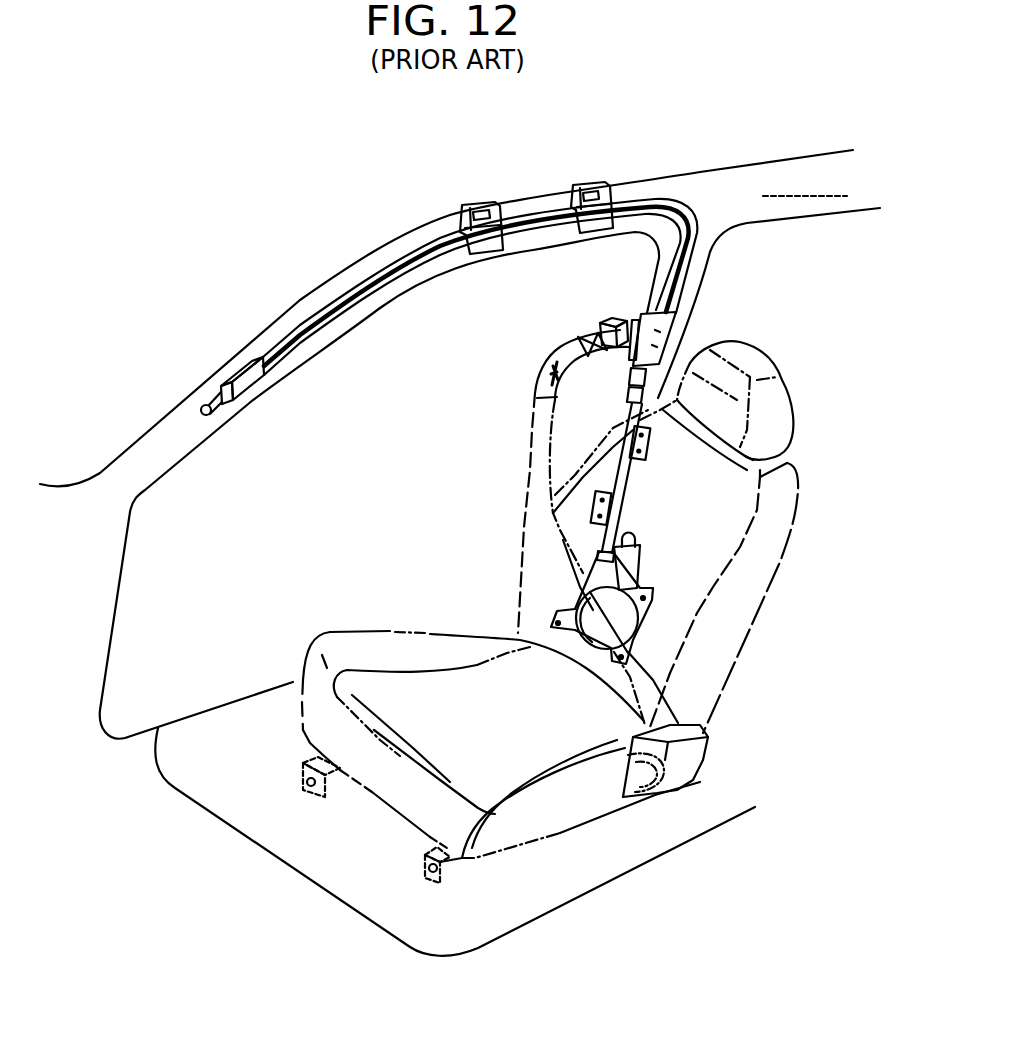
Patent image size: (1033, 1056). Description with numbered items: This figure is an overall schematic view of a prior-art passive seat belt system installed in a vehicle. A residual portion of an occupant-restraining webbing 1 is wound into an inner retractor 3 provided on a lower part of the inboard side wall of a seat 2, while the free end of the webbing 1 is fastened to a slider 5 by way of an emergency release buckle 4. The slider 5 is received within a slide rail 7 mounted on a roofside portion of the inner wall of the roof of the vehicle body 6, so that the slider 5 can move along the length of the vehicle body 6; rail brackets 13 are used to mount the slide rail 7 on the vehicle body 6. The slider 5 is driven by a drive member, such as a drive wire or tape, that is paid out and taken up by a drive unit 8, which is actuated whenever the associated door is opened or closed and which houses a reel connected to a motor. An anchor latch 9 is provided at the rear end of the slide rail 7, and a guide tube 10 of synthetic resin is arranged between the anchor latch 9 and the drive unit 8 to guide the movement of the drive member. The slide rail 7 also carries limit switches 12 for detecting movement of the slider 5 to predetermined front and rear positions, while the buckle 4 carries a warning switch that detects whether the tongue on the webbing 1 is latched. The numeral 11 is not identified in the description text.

The occupant-restraining webbing 1 is at (533, 437).
The seat 2 is at (790, 494).
The inner retractor 3 is at (707, 748).
The emergency release buckle 4 is at (606, 325).
The slider 5 is at (636, 320).
The vehicle body 6 is at (712, 193).
The slide rail 7 is at (327, 310).
The drive unit 8 is at (645, 622).
The anchor latch 9 is at (670, 332).
The guide tube 10 is at (626, 483).
The mounting bracket 11 is at (650, 447).
The limit switches 12 is at (231, 368).
The rail brackets 13 is at (480, 203).